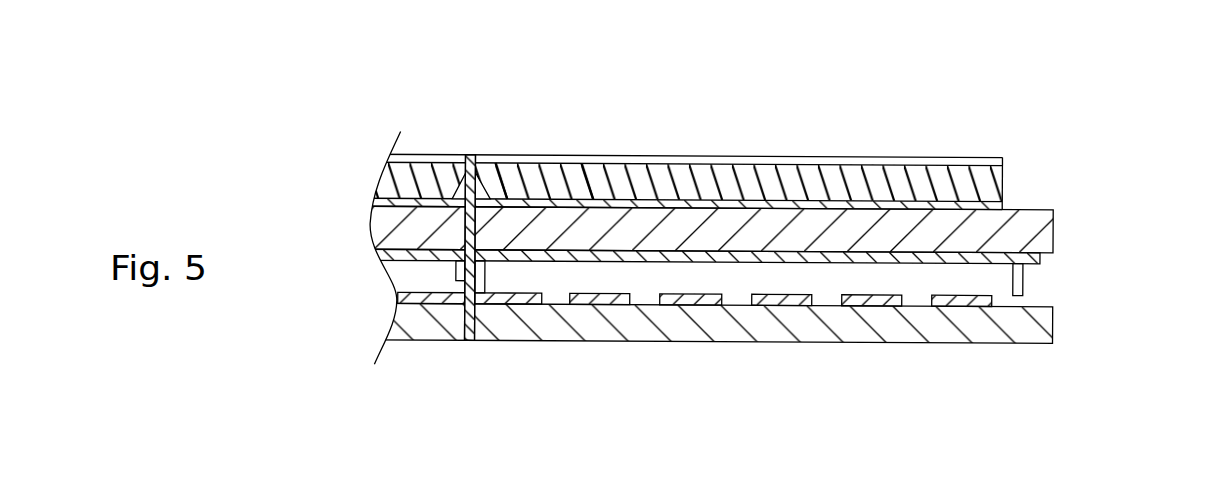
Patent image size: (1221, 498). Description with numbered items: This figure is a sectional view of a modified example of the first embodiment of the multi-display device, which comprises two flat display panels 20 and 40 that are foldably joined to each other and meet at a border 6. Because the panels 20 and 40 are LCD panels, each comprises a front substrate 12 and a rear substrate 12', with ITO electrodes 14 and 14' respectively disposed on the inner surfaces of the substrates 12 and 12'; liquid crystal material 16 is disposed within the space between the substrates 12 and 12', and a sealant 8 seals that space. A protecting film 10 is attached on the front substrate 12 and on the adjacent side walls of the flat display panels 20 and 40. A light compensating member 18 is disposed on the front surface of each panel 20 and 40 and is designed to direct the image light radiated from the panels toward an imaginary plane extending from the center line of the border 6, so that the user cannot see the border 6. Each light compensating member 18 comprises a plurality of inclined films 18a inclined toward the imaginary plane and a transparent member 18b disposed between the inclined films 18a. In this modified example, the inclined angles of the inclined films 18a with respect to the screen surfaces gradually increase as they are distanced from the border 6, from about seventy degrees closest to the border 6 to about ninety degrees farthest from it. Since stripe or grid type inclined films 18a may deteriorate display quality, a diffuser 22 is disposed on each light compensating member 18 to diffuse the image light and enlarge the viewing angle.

The border 6 is at (473, 352).
The sealant 8 is at (1023, 283).
The protecting film 10 is at (690, 205).
The front substrate 12 is at (740, 230).
The rear substrate 12' is at (744, 323).
The ITO electrode 14 is at (700, 195).
The ITO electrode 14' is at (694, 341).
The liquid crystal layer 16 is at (737, 288).
The light compensating member 18 is at (573, 113).
The inclined films 18a is at (505, 182).
The transparent member 18b is at (575, 185).
The flat display panel 20 is at (430, 146).
The diffuser 22 is at (858, 160).
The flat display panel 40 is at (614, 146).